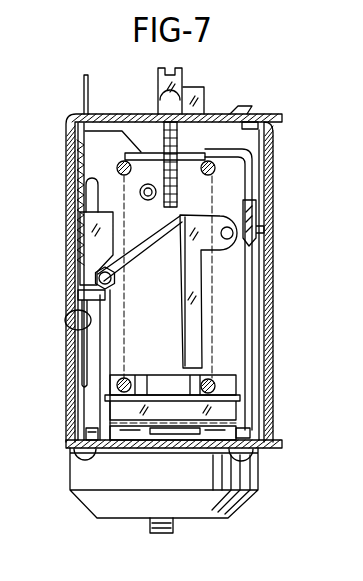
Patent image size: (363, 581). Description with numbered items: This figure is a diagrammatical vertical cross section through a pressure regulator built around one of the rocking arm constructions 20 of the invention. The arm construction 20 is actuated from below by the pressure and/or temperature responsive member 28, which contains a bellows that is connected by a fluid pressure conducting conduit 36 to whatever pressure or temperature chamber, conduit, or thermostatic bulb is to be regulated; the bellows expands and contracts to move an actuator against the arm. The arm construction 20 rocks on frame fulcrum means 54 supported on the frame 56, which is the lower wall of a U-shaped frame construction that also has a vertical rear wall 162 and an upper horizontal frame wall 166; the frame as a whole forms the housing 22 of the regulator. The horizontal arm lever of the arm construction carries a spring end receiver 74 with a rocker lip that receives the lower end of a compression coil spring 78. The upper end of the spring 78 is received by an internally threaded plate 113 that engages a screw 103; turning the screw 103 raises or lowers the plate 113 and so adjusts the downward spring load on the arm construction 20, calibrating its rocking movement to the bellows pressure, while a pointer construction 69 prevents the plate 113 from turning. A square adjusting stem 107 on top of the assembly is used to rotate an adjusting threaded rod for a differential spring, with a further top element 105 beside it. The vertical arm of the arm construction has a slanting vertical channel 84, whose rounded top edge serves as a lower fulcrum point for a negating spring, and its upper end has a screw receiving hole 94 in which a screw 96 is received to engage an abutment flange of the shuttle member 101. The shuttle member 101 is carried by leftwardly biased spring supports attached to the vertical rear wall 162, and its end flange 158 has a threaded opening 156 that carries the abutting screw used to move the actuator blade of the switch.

The arm construction 20 is at (238, 286).
The housing 22 is at (307, 102).
The pressure and/or temperature responsive member 28 is at (107, 508).
The fluid pressure conducting conduit 36 is at (156, 533).
The frame fulcrum means 54 is at (90, 436).
The frame 56 is at (281, 447).
The pointer construction 69 is at (270, 225).
The spring end receiver 74 is at (163, 362).
The compression coil spring 78 is at (210, 383).
The slanting vertical channel 84 is at (192, 312).
The screw receiving hole 94 is at (233, 232).
The screw 96 is at (96, 280).
The shuttle member 101 is at (100, 172).
The screw 103 is at (177, 140).
The lug 105 is at (179, 78).
The square adjusting stem 107 is at (203, 99).
The internally threaded plate 113 is at (254, 150).
The opening 156 is at (146, 183).
The end flange 158 is at (113, 143).
The vertical rear wall 162 is at (67, 222).
The upper horizontal frame wall 166 is at (266, 117).